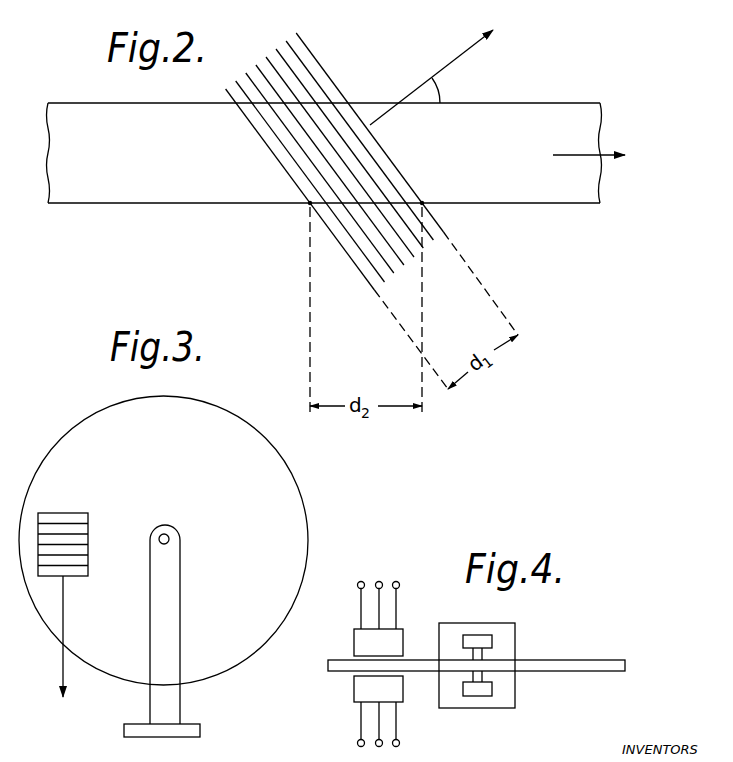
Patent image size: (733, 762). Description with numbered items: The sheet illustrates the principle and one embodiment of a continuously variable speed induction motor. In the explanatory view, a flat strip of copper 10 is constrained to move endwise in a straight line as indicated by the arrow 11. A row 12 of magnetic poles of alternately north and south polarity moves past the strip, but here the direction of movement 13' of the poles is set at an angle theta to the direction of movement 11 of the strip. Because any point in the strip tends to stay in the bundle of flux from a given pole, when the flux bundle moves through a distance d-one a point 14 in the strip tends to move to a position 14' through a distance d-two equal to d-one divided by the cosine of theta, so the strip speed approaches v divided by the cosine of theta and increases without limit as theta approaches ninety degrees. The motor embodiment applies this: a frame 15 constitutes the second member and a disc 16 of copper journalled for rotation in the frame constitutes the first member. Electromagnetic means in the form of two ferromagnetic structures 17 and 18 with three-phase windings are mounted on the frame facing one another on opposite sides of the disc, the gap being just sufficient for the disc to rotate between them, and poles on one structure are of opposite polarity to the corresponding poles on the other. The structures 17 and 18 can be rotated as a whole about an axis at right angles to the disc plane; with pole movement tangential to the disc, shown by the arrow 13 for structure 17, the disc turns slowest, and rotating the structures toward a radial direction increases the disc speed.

In FIG. 2, the flat strip of copper 10 is at (523, 113).
In FIG. 2, the arrow indicating direction of movement of the copper strip 11 is at (594, 157).
In FIG. 2, the row of magnetic poles 12 is at (283, 58).
In FIG. 3, the arrow indicating direction of motion of the poles 13 is at (46, 636).
In FIG. 2, the direction of movement of the poles at angle theta 13' is at (431, 77).
In FIG. 2, the point in the strip 14 is at (290, 224).
In FIG. 2, the position of the point after movement 14' is at (444, 183).
In FIG. 3, the frame 15 is at (168, 704).
In FIG. 4, the frame 15 is at (477, 697).
In FIG. 3, the disc of copper 16 is at (310, 547).
In FIG. 4, the disc of copper 16 is at (597, 662).
In FIG. 3, the ferromagnetic structure 17 is at (88, 547).
In FIG. 4, the ferromagnetic structure 17 is at (353, 687).
In FIG. 4, the ferromagnetic structure 18 is at (357, 640).